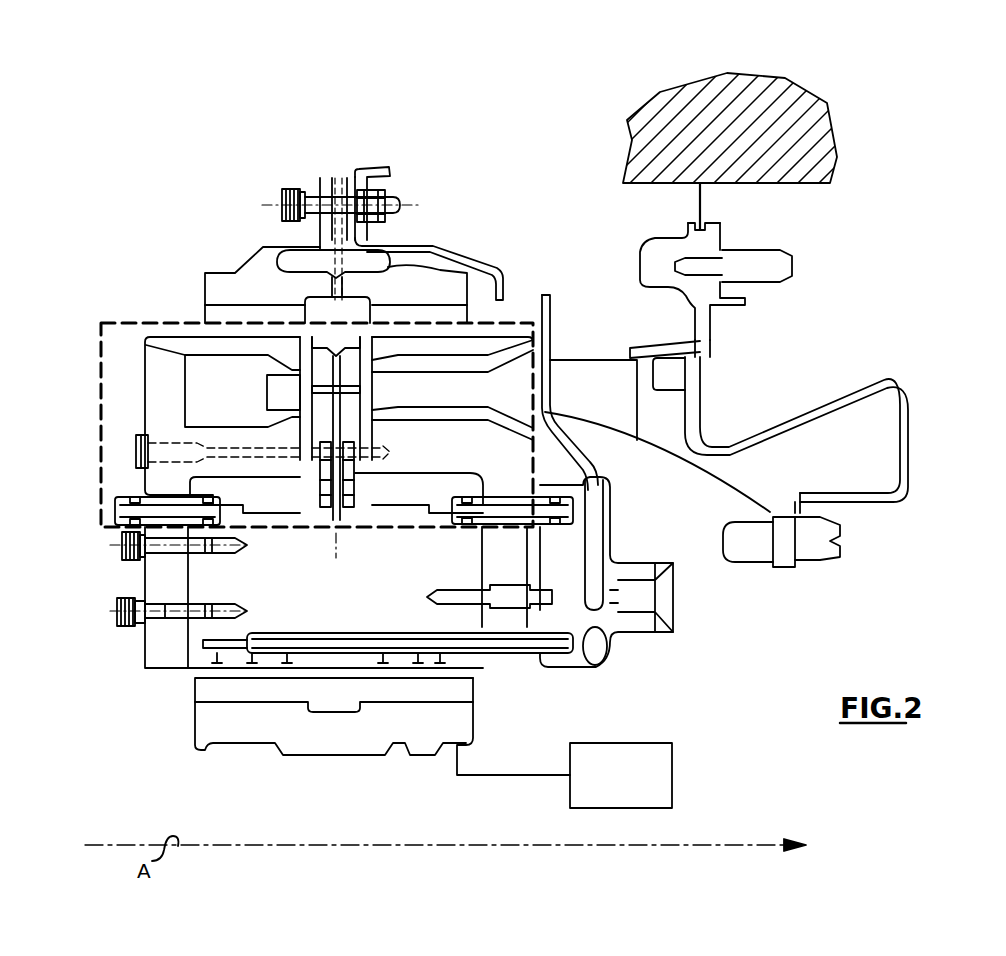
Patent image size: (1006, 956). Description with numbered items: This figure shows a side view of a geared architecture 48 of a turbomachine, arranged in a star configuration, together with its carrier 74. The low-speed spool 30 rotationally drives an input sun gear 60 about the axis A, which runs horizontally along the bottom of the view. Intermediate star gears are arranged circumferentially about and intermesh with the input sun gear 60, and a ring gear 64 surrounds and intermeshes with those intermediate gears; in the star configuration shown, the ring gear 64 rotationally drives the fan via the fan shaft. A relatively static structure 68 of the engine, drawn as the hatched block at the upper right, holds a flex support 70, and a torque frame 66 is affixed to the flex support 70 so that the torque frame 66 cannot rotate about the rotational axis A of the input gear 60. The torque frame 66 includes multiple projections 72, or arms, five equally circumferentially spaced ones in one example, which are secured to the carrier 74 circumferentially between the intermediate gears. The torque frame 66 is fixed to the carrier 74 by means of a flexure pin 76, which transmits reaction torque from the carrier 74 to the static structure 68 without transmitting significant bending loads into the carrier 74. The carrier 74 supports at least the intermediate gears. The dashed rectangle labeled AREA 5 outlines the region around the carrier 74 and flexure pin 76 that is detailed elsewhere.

The low-speed spool 30 is at (632, 787).
The geared architecture 48 is at (490, 172).
The area 5 (detail region) 5 is at (131, 323).
The input sun gear 60 is at (212, 722).
The ring gear 64 is at (243, 282).
The torque frame 66 is at (573, 381).
The static structure 68 is at (732, 160).
The flex support 70 is at (907, 416).
The projection 72 is at (553, 370).
The carrier 74 is at (178, 433).
The flexure pin 76 is at (317, 400).